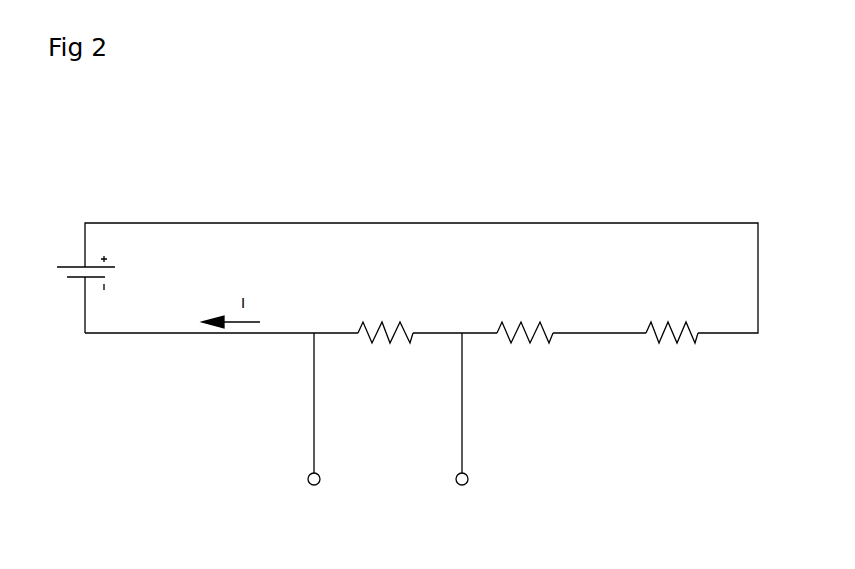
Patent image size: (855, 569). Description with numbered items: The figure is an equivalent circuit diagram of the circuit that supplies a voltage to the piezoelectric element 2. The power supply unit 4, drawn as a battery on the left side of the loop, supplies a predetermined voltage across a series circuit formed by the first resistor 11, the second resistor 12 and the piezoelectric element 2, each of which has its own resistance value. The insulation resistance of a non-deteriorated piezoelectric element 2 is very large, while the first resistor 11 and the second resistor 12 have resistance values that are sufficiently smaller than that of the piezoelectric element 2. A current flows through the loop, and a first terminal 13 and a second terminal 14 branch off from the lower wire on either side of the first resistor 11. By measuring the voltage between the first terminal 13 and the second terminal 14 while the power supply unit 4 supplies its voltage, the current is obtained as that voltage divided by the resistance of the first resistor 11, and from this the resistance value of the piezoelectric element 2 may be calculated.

The power supply unit 4 is at (73, 265).
The first resistor 11 is at (397, 342).
The second resistor 12 is at (534, 342).
The piezoelectric element 2 is at (681, 342).
The first terminal 13 is at (314, 486).
The second terminal 14 is at (462, 486).